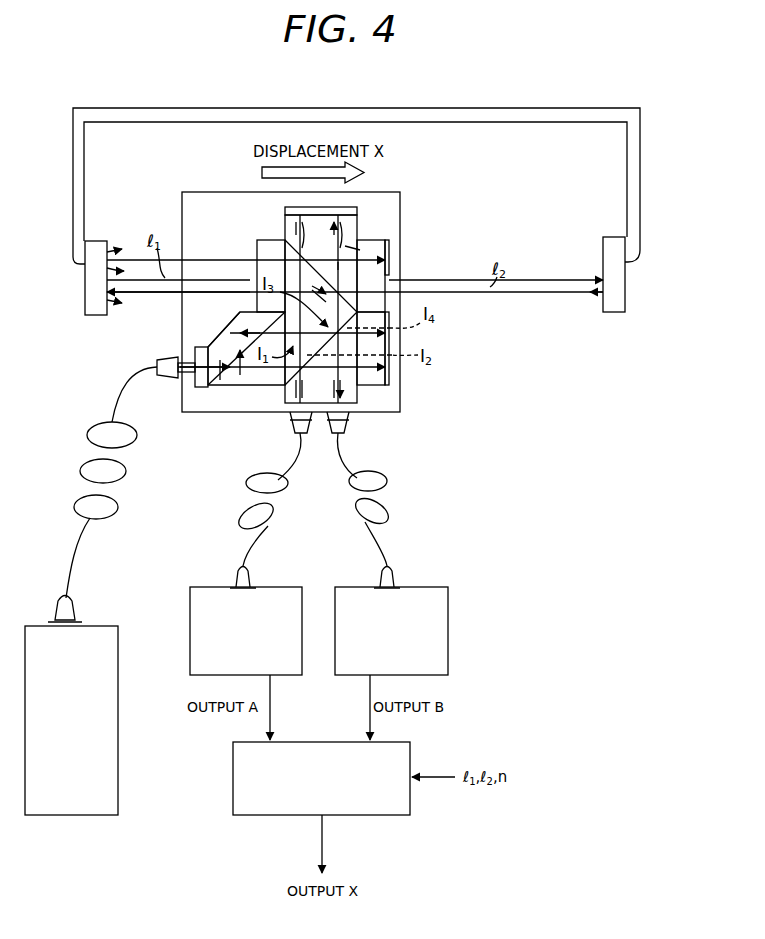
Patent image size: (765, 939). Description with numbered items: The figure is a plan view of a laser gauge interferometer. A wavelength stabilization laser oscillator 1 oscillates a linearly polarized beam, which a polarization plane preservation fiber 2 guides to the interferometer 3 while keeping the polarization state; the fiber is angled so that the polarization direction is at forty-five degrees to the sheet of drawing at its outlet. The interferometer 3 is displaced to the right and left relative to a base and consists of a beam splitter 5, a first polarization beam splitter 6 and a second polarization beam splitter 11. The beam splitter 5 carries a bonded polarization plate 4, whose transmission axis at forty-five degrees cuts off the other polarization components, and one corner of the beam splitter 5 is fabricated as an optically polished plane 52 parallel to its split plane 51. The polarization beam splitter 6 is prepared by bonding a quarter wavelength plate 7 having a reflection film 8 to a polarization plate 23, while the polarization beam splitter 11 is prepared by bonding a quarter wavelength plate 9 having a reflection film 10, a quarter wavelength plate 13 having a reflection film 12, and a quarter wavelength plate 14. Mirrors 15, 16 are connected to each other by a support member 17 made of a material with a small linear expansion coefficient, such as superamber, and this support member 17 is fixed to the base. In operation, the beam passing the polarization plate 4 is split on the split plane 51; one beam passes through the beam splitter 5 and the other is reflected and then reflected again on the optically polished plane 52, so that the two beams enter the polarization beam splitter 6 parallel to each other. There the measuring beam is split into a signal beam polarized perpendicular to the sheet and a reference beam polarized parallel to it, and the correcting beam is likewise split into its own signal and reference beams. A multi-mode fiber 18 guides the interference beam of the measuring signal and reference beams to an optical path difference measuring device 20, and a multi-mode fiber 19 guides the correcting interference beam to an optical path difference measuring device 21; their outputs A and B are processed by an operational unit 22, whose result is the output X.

The wavelength stabilization laser oscillator 1 is at (118, 800).
The polarization plane preservation fiber 2 is at (72, 492).
The interferometer 3 is at (182, 194).
The polarization plate 4 is at (195, 357).
The beam splitter (B.S.) 5 is at (242, 323).
The polarization beam splitter (P.B.S.) 6 is at (365, 403).
The quarter wavelength plate 7 is at (390, 382).
The reflection film 8 is at (390, 340).
The quarter wavelength plate 9 is at (389, 268).
The reflection film 10 is at (390, 247).
The polarization beam splitter (P.B.S.) 11 is at (350, 246).
The reflection film 12 is at (292, 208).
The quarter wavelength plate 13 is at (290, 232).
The quarter wavelength plate 14 is at (259, 250).
The mirror 15 is at (93, 316).
The mirror 16 is at (592, 255).
The support member 17 is at (121, 107).
The multi-mode fiber 18 is at (250, 483).
The multi-mode fiber 19 is at (385, 500).
The optical path difference measuring device 20 is at (190, 604).
The optical path difference measuring device 21 is at (448, 608).
The operational unit 22 is at (410, 805).
The polarization plate 23 is at (287, 403).
The split plane 51 is at (223, 400).
The optically polished plane 52 is at (203, 333).